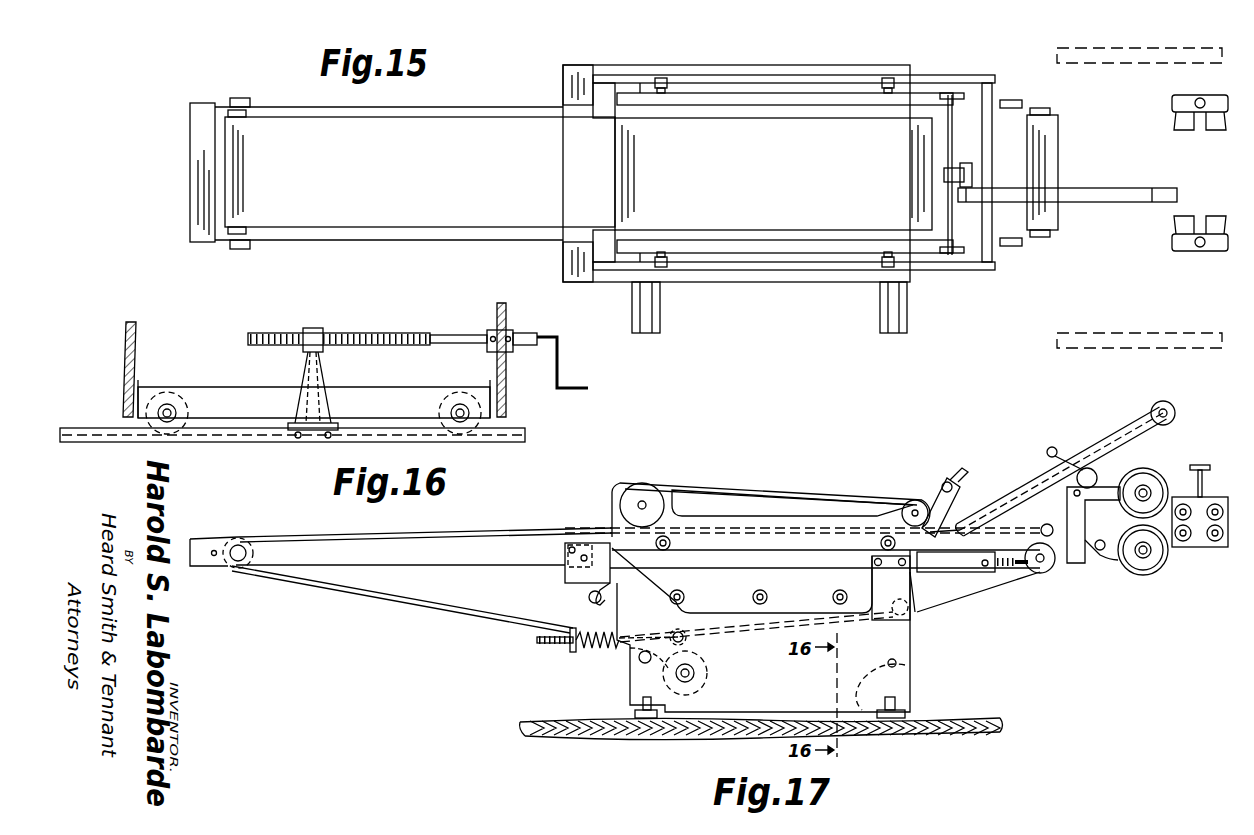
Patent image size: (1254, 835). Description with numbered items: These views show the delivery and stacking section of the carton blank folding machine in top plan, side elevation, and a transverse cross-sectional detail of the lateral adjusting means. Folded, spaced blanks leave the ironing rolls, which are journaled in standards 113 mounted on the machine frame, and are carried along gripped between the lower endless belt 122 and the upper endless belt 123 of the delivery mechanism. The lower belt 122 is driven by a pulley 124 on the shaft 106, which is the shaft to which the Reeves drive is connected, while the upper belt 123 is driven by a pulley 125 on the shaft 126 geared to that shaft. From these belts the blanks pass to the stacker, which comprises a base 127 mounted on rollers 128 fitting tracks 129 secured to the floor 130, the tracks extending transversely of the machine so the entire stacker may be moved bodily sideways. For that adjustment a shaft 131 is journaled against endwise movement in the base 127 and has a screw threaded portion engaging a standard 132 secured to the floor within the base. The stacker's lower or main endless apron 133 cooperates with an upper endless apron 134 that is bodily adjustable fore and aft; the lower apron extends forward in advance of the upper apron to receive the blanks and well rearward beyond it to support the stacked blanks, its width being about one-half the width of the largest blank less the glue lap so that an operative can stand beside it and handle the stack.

In FIG. 17, the shaft 106 is at (1148, 558).
In FIG. 15, the standards 113 is at (1172, 100).
In FIG. 17, the standards 113 is at (1208, 547).
In FIG. 17, the lower endless belt 122 is at (1092, 560).
In FIG. 15, the upper endless belt 123 is at (1103, 202).
In FIG. 17, the upper endless belt 123 is at (1115, 485).
In FIG. 17, the pulley 124 is at (1133, 566).
In FIG. 17, the pulley 125 is at (1152, 485).
In FIG. 17, the shaft 126 is at (1150, 490).
In FIG. 16, the base 127 is at (508, 318).
In FIG. 17, the base 127 is at (633, 676).
In FIG. 16, the rollers 128 is at (163, 405).
In FIG. 17, the rollers 128 is at (900, 668).
In FIG. 15, the tracks 129 is at (660, 322).
In FIG. 16, the tracks 129 is at (90, 428).
In FIG. 17, the tracks 129 is at (640, 703).
In FIG. 17, the floor 130 is at (945, 738).
In FIG. 16, the shaft 131 is at (470, 333).
In FIG. 17, the shaft 131 is at (896, 661).
In FIG. 16, the standard 132 is at (314, 328).
In FIG. 15, the lower endless apron 133 is at (402, 173).
In FIG. 17, the lower endless apron 133 is at (318, 536).
In FIG. 15, the upper endless apron 134 is at (892, 198).
In FIG. 17, the upper endless apron 134 is at (660, 483).